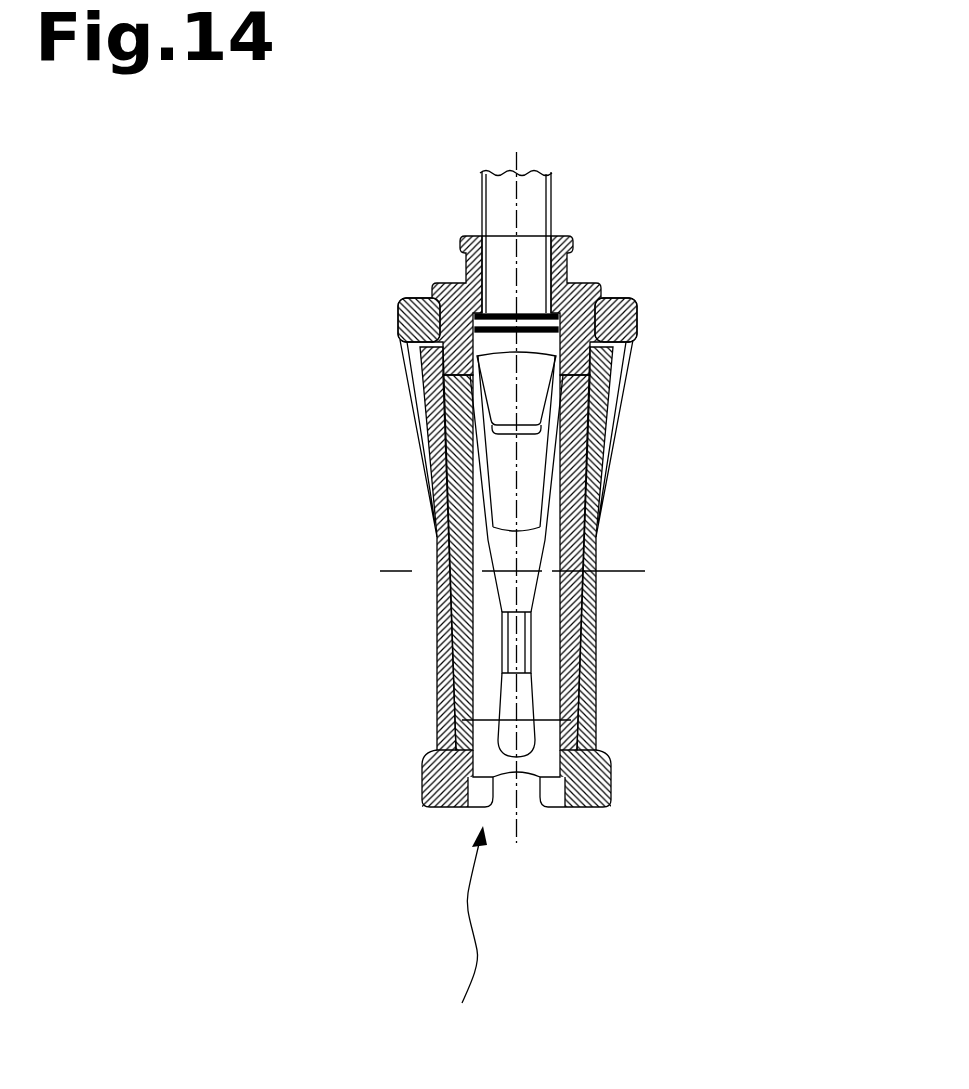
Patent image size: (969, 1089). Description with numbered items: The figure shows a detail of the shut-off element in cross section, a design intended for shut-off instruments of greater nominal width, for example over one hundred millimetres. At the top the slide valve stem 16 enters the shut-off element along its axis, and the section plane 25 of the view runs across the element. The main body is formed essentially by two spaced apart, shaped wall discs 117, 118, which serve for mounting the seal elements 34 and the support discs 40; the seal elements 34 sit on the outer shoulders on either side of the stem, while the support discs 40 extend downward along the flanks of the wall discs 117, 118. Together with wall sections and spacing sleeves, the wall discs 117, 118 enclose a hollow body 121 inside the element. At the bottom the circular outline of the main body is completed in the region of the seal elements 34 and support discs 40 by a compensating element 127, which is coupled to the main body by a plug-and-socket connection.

The slide valve stem 16 is at (532, 205).
The seal element 34 is at (398, 308).
The support disc 40 is at (422, 390).
The section plane 25 is at (414, 582).
The wall disc 117 is at (433, 682).
The wall disc 118 is at (592, 678).
The compensating element 127 is at (521, 765).
The hollow body 121 is at (460, 946).